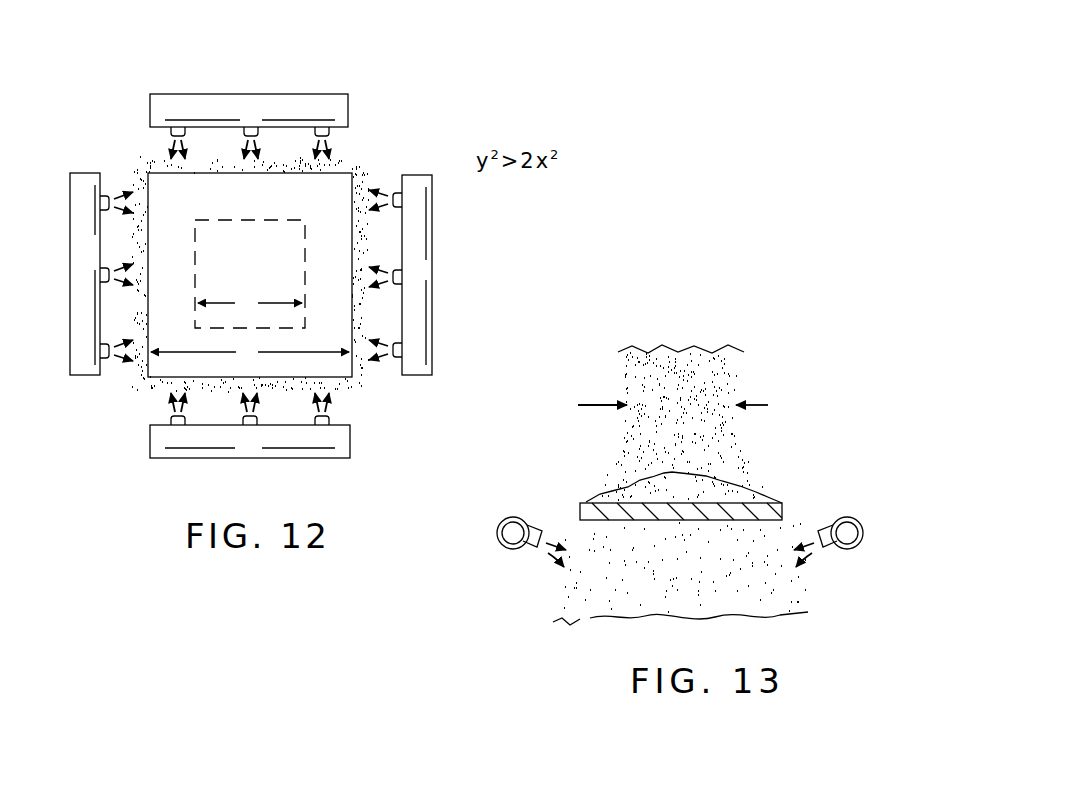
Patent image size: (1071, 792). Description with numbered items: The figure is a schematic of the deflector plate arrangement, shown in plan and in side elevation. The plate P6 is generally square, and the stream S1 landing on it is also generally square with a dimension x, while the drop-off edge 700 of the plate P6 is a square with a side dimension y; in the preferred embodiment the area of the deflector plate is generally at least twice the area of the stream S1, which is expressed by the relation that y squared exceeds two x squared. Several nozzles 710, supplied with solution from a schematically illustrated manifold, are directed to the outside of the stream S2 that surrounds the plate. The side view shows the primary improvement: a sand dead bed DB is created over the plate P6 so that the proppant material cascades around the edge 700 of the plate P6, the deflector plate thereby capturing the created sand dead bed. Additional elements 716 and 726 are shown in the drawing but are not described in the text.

In FIG. 12, the drop-off edge 700 is at (280, 295).
In FIG. 13, the drop-off edge 700 is at (727, 530).
In FIG. 12, the nozzles 710 is at (104, 196).
In FIG. 12, the nozzle 716 is at (252, 128).
In FIG. 12, the nozzle bar 726 is at (304, 102).
In FIG. 12, the plate P6 is at (334, 176).
In FIG. 13, the plate P6 is at (654, 522).
In FIG. 12, the stream S1 is at (309, 229).
In FIG. 13, the stream S1 is at (742, 372).
In FIG. 12, the stream S2 is at (337, 385).
In FIG. 13, the stream S2 is at (808, 590).
In FIG. 13, the sand dead bed DB is at (715, 490).